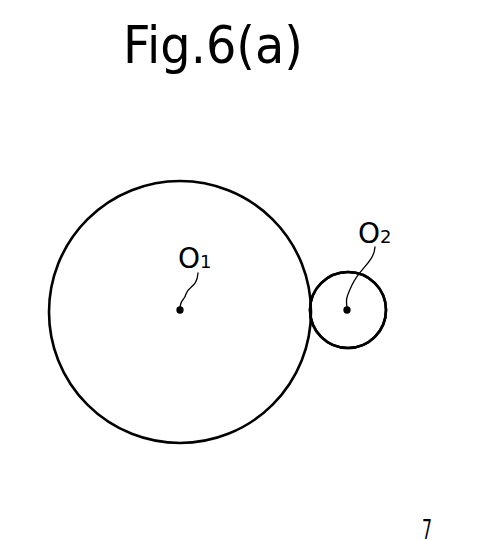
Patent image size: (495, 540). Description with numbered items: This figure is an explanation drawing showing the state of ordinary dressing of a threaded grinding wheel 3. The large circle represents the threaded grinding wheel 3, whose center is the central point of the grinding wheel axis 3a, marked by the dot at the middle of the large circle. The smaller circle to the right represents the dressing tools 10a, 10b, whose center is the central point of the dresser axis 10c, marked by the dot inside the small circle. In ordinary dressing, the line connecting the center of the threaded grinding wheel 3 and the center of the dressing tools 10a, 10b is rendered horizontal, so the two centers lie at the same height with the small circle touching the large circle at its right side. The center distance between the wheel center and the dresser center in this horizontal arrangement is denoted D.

The threaded grinding wheel 3 is at (208, 200).
The grinding wheel axis 3a is at (180, 310).
The dressing tool 10a is at (353, 335).
The dressing tool 10b is at (348, 310).
The dresser axis 10c is at (347, 310).